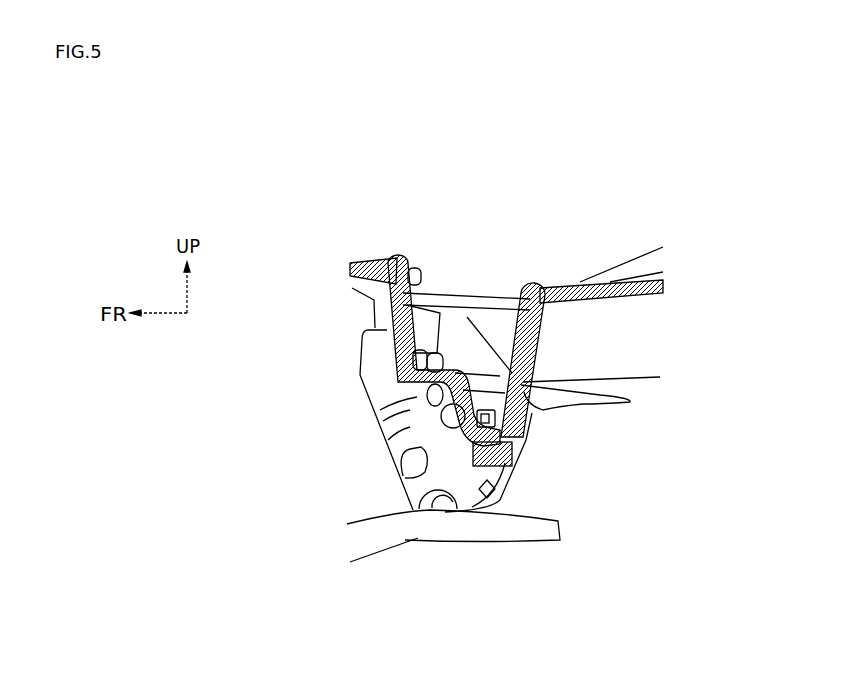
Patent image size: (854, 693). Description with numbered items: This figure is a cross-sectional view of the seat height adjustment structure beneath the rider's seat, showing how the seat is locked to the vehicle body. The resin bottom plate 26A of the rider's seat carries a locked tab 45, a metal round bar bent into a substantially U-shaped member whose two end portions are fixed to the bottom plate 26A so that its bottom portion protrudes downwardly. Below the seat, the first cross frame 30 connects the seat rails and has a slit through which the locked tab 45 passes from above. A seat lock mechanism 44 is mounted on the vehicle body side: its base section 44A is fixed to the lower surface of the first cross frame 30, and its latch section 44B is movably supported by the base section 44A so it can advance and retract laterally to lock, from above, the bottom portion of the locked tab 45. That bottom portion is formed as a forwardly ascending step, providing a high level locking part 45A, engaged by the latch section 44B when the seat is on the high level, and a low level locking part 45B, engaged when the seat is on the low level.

The bottom plate 26A is at (580, 285).
The first cross frame 30 is at (580, 395).
The seat lock mechanism 44 is at (547, 473).
The base section 44A is at (398, 438).
The latch section 44B is at (485, 467).
The locked tab 45 is at (388, 389).
The high level locking part 45A is at (514, 405).
The low level locking part 45B is at (439, 335).